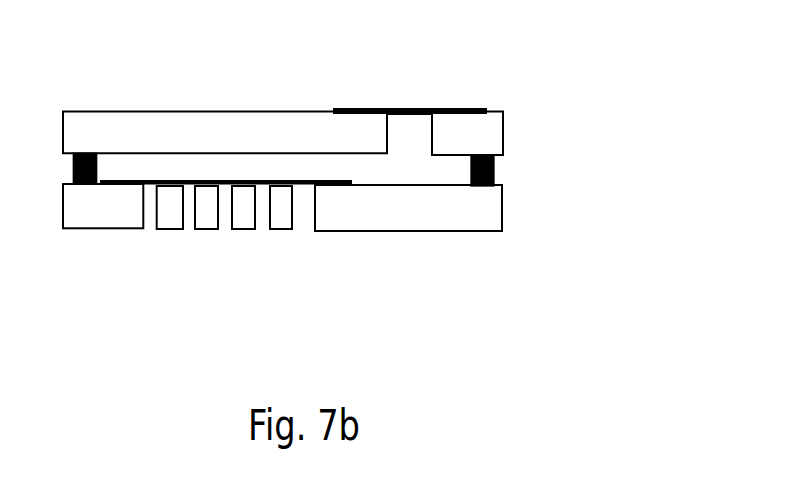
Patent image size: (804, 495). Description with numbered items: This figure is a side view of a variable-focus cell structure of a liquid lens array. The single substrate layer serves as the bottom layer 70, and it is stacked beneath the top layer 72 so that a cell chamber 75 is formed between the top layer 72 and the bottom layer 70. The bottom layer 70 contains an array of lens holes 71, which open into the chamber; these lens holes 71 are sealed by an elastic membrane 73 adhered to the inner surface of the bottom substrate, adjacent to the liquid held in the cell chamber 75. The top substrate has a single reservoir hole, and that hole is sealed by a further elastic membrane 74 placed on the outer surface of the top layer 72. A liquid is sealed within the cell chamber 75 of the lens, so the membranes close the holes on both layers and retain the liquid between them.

The bottom layer 70 is at (479, 207).
The lens holes 71 is at (150, 202).
The top layer 72 is at (505, 125).
The elastic membrane 73 is at (191, 173).
The elastic membrane 74 is at (392, 105).
The cell chamber 75 is at (392, 167).